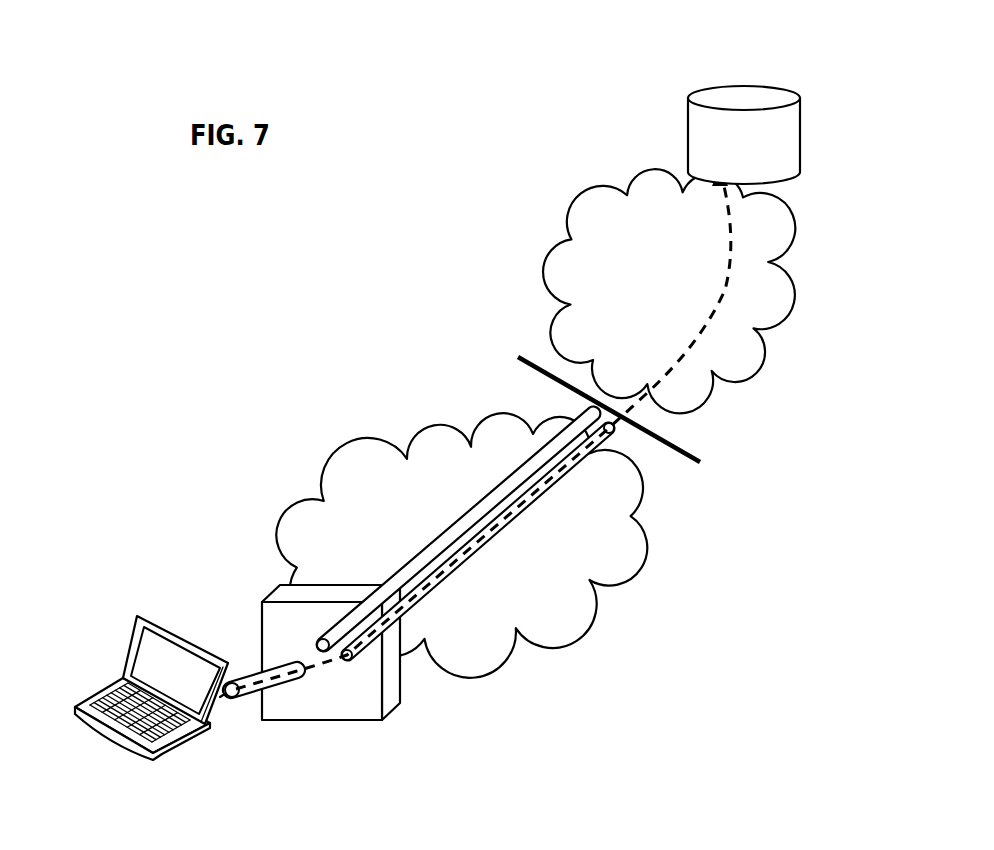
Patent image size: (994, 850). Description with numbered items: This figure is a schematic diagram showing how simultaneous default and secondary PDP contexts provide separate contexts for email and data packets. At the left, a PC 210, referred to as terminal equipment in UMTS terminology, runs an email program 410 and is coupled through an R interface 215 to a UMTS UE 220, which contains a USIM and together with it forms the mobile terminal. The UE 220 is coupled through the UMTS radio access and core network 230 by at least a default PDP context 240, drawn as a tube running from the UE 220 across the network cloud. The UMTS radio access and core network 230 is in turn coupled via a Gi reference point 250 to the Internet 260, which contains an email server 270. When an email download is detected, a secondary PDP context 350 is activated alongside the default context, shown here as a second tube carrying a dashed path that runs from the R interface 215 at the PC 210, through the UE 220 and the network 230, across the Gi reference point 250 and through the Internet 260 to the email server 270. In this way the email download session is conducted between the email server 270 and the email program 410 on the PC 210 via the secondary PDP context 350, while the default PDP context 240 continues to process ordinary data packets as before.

The PC 210 is at (135, 663).
The email program 410 is at (147, 655).
The R interface 215 is at (243, 697).
The UMTS UE 220 is at (395, 708).
The UMTS radio access and core network 230 is at (320, 472).
The default PDP context 240 is at (566, 428).
The secondary PDP context 350 is at (500, 533).
The Gi reference point 250 is at (653, 432).
The Internet 260 is at (586, 195).
The email server 270 is at (765, 82).